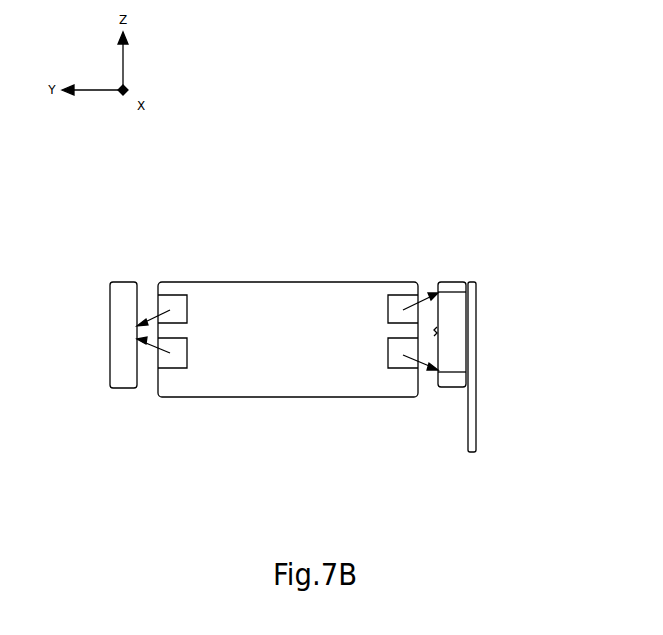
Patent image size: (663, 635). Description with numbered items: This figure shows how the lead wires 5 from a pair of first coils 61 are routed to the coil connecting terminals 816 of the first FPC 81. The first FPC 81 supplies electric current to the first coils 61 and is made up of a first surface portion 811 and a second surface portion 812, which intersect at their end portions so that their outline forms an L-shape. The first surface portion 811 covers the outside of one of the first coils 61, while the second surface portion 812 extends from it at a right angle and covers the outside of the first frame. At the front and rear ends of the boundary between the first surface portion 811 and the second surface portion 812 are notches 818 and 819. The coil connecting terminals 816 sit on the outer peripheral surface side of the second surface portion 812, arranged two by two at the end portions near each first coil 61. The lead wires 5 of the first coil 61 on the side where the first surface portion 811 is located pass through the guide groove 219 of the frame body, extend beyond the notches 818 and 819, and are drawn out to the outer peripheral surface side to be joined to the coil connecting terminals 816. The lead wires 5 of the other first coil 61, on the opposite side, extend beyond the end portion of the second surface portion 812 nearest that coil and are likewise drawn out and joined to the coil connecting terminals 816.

The first FPC 81 is at (322, 232).
The second surface portion 812 is at (282, 282).
The coil connecting terminals 816 is at (188, 345).
The first coil 61 is at (120, 283).
The notch 818 is at (437, 292).
The notch 819 is at (437, 380).
The first surface portion 811 is at (477, 310).
The lead wires 5 is at (146, 320).
The guide groove 219 is at (437, 328).